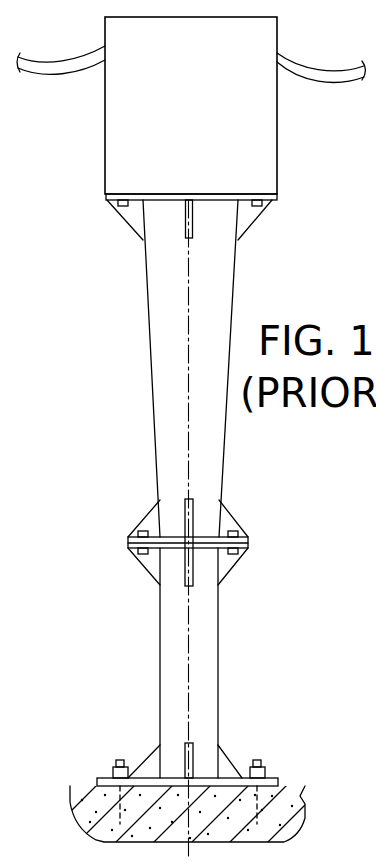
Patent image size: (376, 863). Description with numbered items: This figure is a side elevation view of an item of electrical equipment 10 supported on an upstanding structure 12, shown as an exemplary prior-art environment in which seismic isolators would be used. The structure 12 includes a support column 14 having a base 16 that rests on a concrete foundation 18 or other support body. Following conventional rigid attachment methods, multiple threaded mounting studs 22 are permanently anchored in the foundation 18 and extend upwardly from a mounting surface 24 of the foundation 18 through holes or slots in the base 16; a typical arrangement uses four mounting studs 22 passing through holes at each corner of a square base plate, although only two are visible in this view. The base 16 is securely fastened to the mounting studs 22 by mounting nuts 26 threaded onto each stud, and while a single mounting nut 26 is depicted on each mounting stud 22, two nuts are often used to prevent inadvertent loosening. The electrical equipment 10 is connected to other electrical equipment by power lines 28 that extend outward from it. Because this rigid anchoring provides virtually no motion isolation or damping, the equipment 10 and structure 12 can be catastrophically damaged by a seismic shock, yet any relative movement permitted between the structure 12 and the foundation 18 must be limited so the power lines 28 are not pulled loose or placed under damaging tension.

The electrical equipment 10 is at (118, 155).
The upstanding structure 12 is at (100, 372).
The support column 14 is at (172, 640).
The base 16 is at (278, 780).
The concrete foundation 18 is at (80, 797).
The mounting studs 22 is at (116, 761).
The mounting surface 24 is at (302, 777).
The mounting nuts 26 is at (112, 772).
The power lines 28 is at (48, 73).